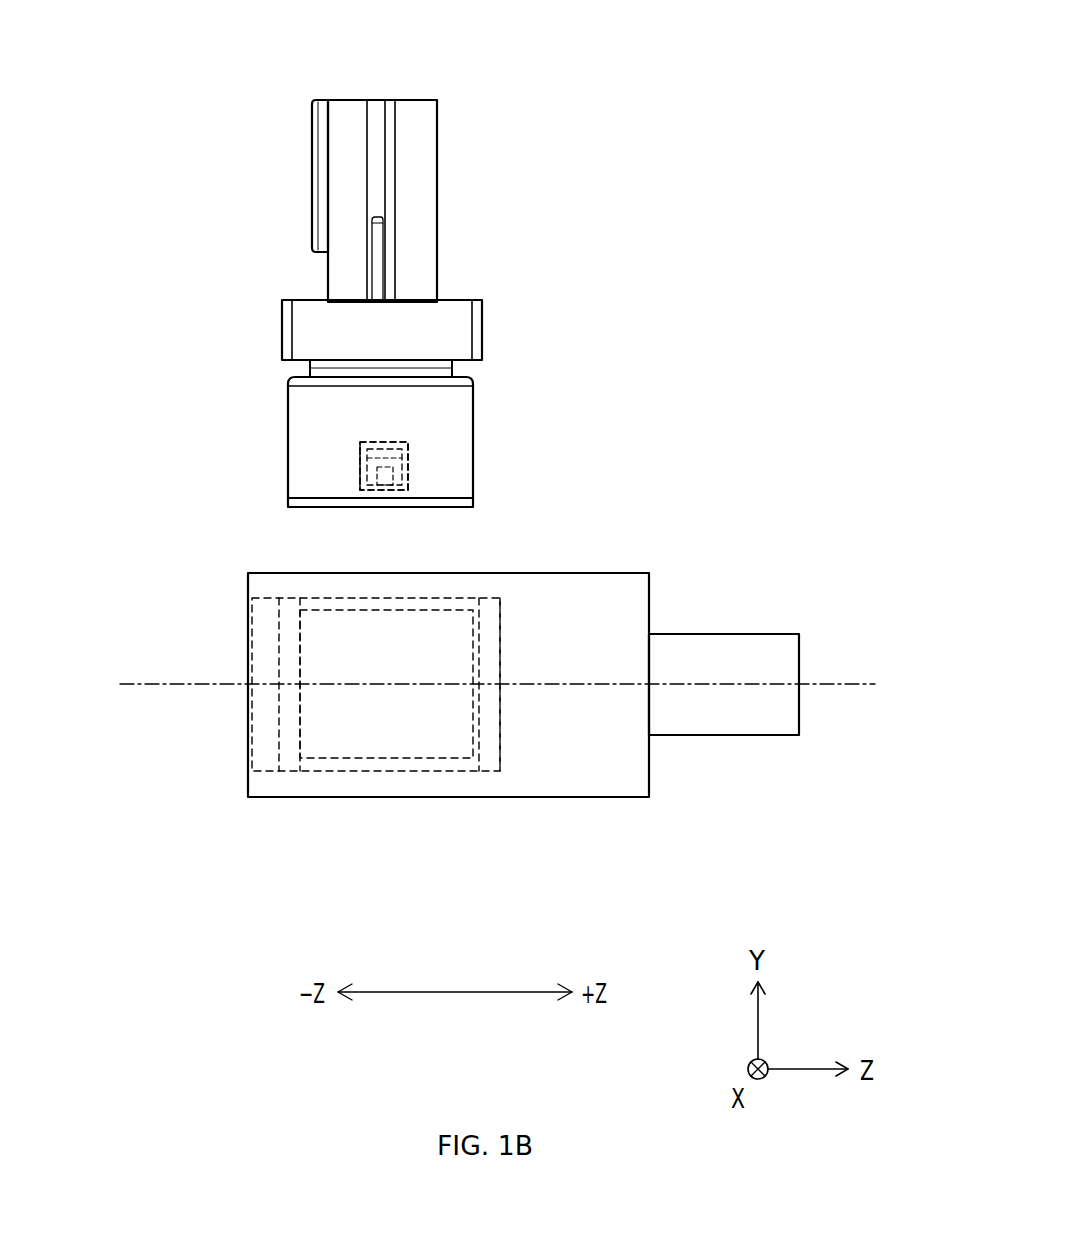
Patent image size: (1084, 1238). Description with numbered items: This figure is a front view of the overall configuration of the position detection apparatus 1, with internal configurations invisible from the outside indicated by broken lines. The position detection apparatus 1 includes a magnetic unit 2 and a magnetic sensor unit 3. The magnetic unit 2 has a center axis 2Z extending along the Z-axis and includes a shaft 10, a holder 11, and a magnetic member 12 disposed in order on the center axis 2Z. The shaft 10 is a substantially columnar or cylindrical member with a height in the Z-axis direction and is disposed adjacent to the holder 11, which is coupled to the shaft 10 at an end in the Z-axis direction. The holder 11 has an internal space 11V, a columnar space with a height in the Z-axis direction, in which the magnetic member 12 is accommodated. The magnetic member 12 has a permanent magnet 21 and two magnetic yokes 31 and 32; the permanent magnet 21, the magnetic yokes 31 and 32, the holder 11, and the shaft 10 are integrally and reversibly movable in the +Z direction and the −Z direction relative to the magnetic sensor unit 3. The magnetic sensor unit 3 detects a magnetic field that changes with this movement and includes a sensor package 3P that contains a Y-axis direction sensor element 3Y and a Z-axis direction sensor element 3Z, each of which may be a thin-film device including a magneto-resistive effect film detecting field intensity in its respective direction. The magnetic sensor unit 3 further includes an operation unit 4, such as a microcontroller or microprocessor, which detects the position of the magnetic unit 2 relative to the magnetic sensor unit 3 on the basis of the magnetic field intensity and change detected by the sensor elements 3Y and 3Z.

The position detection apparatus 1 is at (737, 121).
The magnetic unit 2 is at (670, 527).
The magnetic sensor unit 3 is at (198, 287).
The sensor package 3P is at (369, 443).
The Y-axis direction sensor element 3Y is at (369, 500).
The Z-axis direction sensor element 3Z is at (403, 500).
The operation unit 4 is at (410, 452).
The shaft 10 is at (742, 718).
The holder 11 is at (607, 781).
The internal space 11V is at (263, 600).
The magnetic member 12 is at (379, 772).
The permanent magnet 21 is at (382, 760).
The center axis 2Z is at (155, 687).
The magnetic yoke 31 is at (278, 773).
The magnetic yoke 32 is at (478, 741).